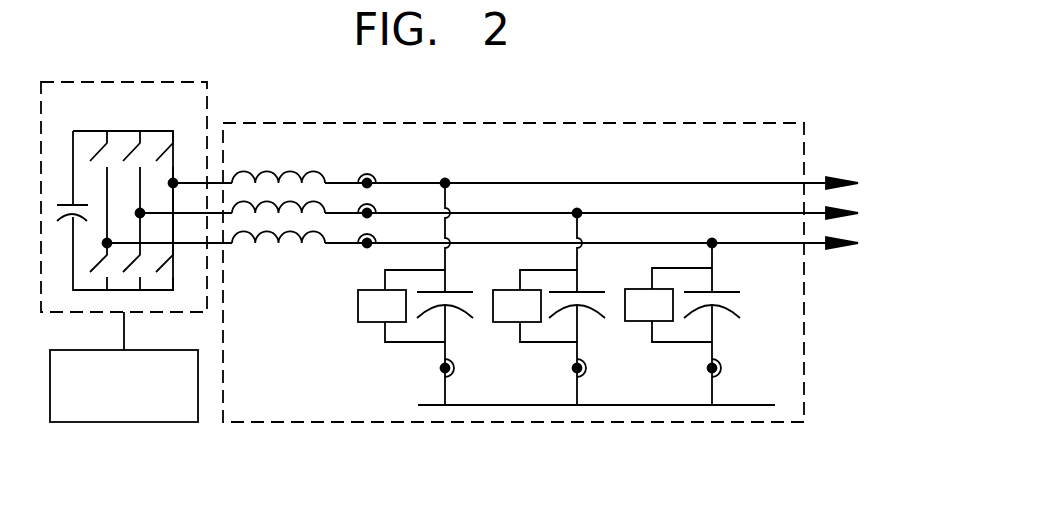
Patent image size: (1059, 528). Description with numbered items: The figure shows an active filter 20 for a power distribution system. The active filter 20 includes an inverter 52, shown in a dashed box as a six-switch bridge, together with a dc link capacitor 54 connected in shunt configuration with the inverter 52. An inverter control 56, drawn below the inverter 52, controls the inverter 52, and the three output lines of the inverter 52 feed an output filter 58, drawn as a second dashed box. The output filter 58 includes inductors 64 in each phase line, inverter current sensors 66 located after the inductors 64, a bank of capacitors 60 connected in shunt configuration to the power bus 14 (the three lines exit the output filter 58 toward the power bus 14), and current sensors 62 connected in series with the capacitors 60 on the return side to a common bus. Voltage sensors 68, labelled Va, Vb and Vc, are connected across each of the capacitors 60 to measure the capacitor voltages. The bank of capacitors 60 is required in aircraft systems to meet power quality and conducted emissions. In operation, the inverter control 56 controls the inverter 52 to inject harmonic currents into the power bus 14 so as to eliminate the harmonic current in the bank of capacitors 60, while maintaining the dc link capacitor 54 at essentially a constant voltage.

The power bus 14 is at (869, 213).
The active filter 20 is at (597, 452).
The inverter 52 is at (174, 82).
The dc link capacitor 54 is at (63, 203).
The inverter control 56 is at (145, 422).
The output filter 58 is at (562, 123).
The capacitors 60 is at (720, 288).
The current sensors 62 is at (719, 361).
The inductors 64 is at (288, 171).
The inverter current sensors 66 is at (368, 172).
The voltage sensors 68 is at (358, 305).